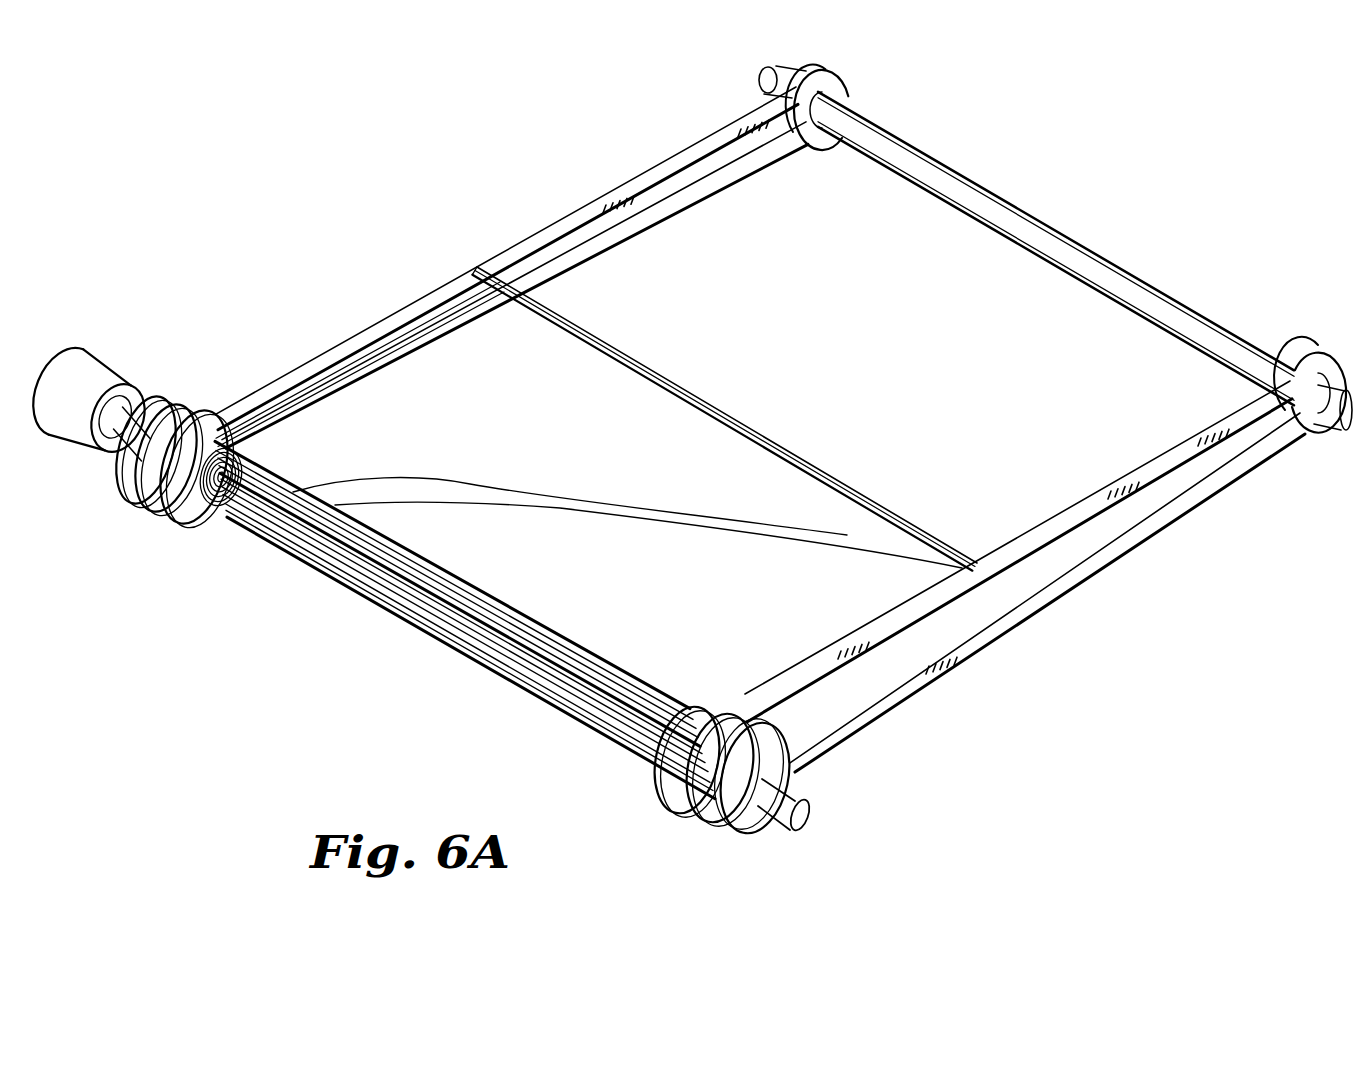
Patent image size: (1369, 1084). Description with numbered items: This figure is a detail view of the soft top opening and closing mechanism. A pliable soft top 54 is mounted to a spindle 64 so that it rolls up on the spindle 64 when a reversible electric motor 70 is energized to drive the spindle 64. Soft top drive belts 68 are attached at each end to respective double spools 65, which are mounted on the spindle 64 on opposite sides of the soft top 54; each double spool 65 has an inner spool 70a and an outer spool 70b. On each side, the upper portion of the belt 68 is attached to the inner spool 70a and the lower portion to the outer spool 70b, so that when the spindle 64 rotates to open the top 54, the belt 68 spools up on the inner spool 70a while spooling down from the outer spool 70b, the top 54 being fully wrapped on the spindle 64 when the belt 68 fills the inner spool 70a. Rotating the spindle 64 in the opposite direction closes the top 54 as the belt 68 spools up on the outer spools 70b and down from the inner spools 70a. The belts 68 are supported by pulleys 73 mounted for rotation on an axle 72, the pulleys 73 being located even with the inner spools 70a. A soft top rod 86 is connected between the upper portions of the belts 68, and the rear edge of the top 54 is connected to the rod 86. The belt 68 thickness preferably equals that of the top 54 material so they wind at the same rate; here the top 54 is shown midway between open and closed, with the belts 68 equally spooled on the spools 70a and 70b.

The pliable soft top 54 is at (579, 490).
The spindle 64 is at (462, 633).
The double spools 65 is at (191, 386).
The soft top drive belts 68 is at (515, 258).
The reversible electric motor 70 is at (106, 362).
The inner spool 70a is at (160, 528).
The outer spool 70b is at (140, 490).
The axle 72 is at (992, 186).
The pulleys 73 is at (852, 88).
The soft top rod 86 is at (690, 392).